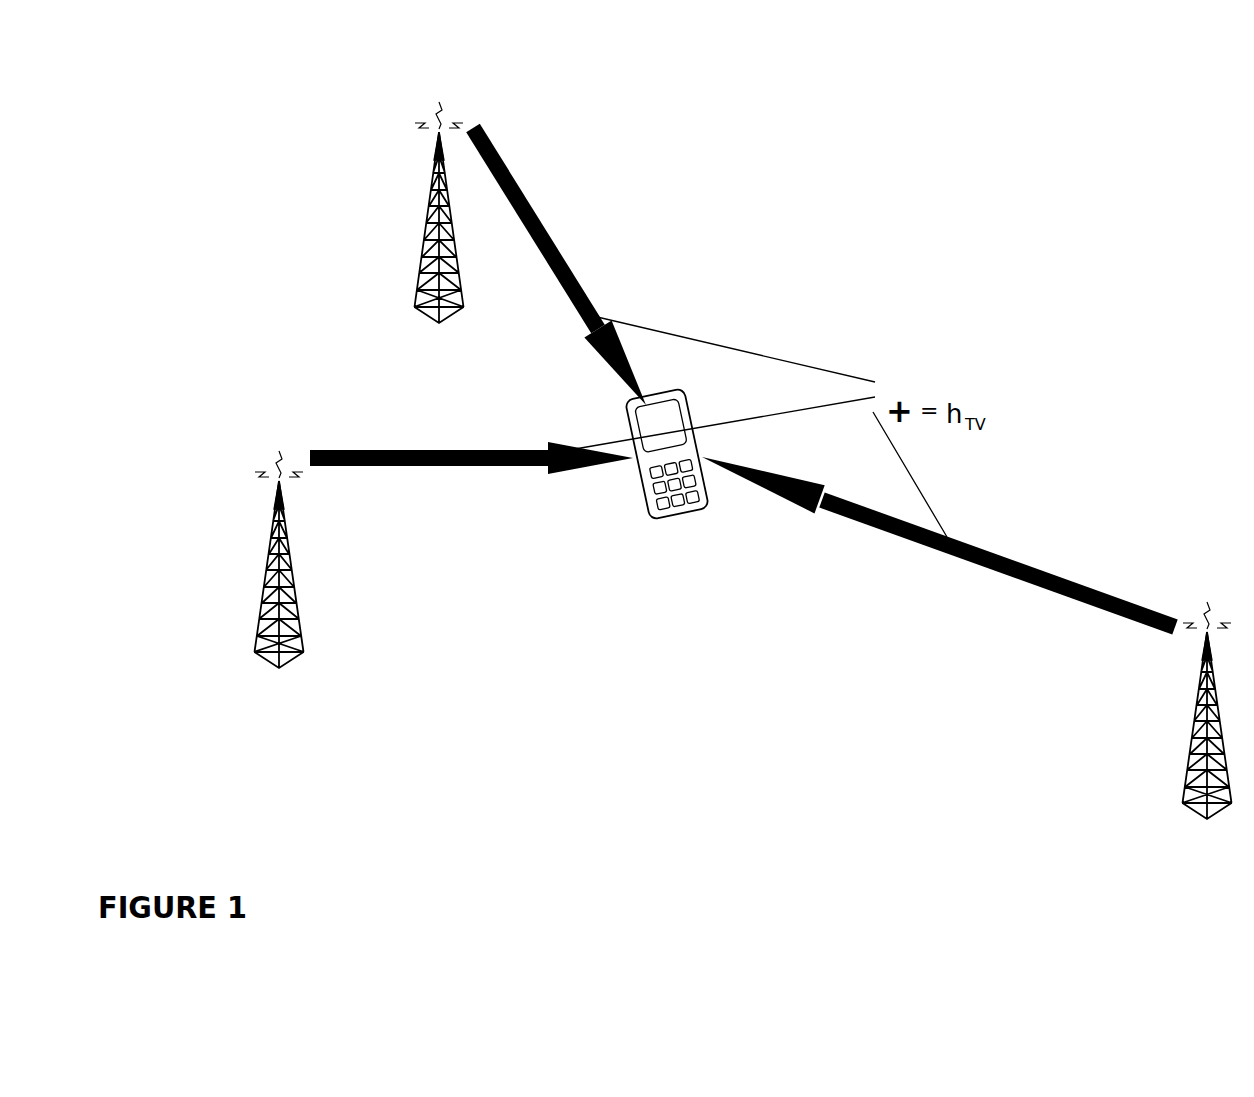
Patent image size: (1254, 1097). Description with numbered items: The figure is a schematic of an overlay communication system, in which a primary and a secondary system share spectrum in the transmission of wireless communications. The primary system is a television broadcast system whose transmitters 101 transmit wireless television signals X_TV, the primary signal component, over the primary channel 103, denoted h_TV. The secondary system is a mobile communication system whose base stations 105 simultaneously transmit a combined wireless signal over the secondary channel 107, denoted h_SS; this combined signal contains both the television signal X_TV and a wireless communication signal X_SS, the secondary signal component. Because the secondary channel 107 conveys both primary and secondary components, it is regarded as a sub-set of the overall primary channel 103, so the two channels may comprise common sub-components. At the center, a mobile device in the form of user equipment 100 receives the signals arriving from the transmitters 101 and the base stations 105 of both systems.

The user equipment 100 is at (636, 503).
The transmitters 101 is at (256, 652).
The primary channel 103 is at (422, 467).
The base stations 105 is at (415, 305).
The secondary channel 107 is at (503, 165).